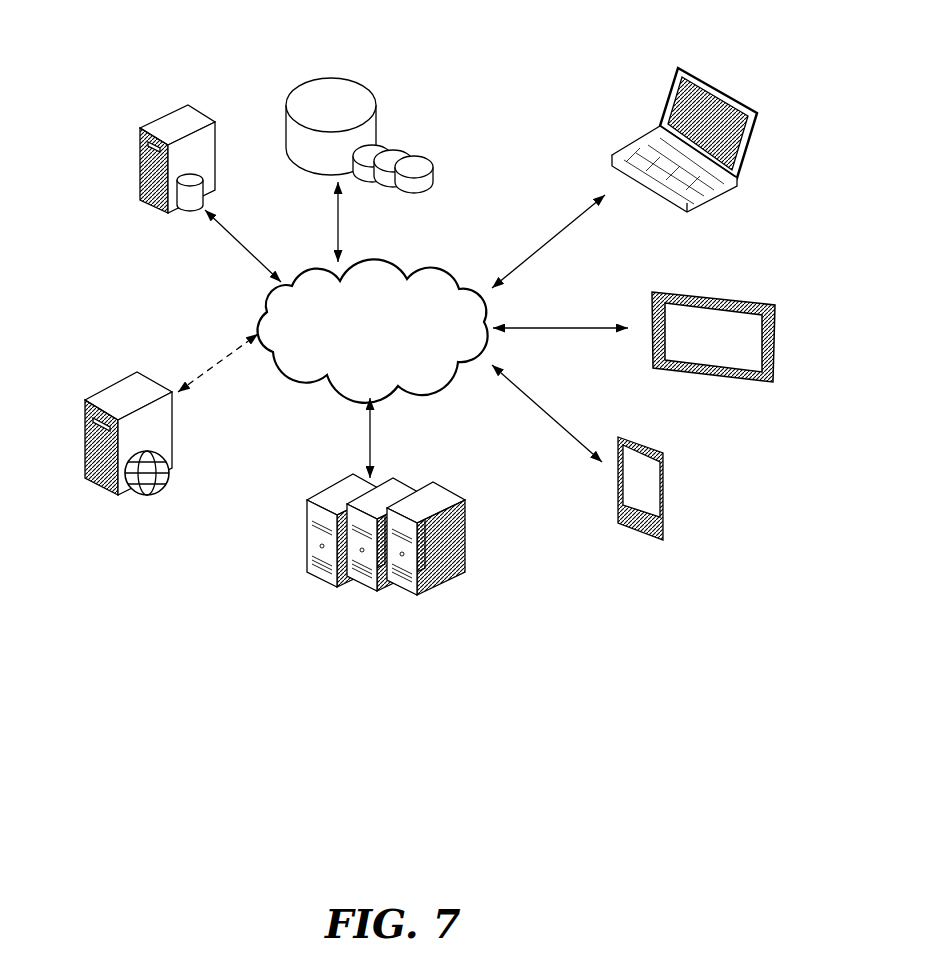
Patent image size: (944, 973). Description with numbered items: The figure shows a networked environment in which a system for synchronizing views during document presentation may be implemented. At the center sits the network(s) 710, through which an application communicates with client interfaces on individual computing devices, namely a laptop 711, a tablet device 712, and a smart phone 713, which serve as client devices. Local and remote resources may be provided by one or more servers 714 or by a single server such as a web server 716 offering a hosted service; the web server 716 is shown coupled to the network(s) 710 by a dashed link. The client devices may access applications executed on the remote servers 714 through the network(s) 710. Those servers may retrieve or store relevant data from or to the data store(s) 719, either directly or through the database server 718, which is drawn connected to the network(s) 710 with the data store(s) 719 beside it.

The network(s) 710 is at (373, 256).
The laptop 711 is at (697, 42).
The tablet device 712 is at (773, 286).
The smart phone 713 is at (671, 456).
The servers 714 is at (335, 479).
The web server 716 is at (105, 386).
The database server 718 is at (178, 220).
The data store(s) 719 is at (347, 57).